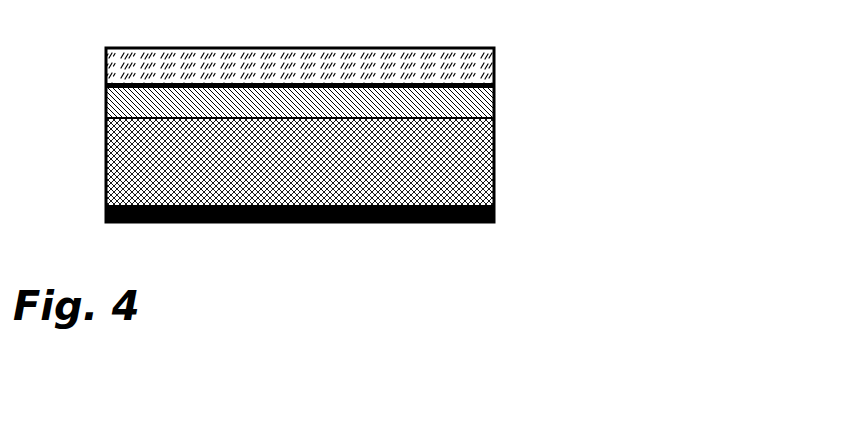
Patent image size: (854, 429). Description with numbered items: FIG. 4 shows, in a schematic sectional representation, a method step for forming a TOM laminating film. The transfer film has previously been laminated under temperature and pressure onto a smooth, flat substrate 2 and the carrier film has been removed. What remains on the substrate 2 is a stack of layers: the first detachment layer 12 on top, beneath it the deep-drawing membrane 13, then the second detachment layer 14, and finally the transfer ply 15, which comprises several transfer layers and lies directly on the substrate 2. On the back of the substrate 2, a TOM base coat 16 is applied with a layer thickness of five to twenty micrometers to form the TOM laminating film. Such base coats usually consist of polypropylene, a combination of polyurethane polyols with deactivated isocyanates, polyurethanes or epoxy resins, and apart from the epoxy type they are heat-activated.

The first detachment layer 12 is at (494, 50).
The deep-drawing membrane 13 is at (490, 67).
The second detachment layer 14 is at (494, 88).
The transfer ply 15 is at (490, 105).
The substrate 2 is at (487, 170).
The TOM base coat 16 is at (494, 212).